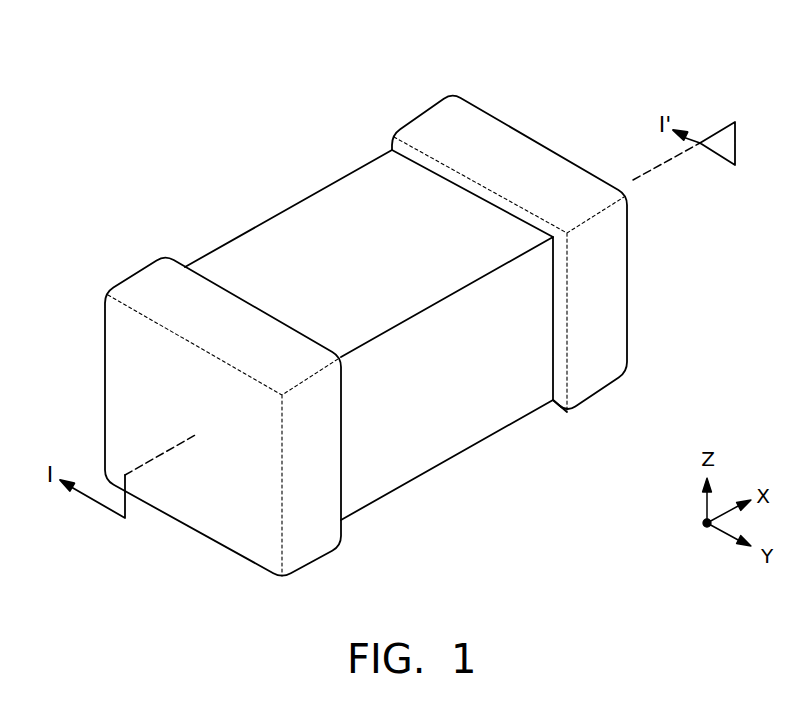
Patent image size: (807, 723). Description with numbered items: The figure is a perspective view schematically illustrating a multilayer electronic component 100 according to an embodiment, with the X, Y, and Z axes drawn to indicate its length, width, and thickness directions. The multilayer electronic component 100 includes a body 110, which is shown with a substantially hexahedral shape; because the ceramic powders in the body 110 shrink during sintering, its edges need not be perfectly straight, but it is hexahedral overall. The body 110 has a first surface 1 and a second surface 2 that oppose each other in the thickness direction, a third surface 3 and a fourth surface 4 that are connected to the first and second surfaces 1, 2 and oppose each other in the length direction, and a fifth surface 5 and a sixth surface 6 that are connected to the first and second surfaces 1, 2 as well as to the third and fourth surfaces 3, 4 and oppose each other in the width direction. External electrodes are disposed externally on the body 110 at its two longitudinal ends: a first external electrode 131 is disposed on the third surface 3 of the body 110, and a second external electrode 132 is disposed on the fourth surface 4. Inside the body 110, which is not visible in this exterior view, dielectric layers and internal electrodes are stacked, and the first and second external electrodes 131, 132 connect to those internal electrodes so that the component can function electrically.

The multilayer electronic component 100 is at (227, 57).
The body 110 is at (383, 170).
The first external electrode 131 is at (125, 420).
The second external electrode 132 is at (440, 120).
The first surface 1 is at (448, 417).
The second surface 2 is at (333, 209).
The third surface 3 is at (207, 498).
The fourth surface 4 is at (598, 272).
The fifth surface 5 is at (498, 397).
The sixth surface 6 is at (298, 233).